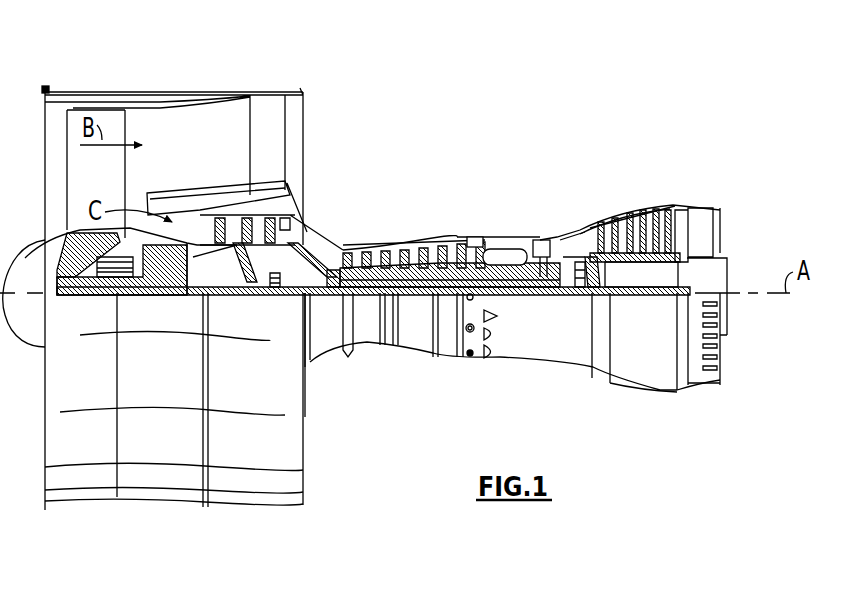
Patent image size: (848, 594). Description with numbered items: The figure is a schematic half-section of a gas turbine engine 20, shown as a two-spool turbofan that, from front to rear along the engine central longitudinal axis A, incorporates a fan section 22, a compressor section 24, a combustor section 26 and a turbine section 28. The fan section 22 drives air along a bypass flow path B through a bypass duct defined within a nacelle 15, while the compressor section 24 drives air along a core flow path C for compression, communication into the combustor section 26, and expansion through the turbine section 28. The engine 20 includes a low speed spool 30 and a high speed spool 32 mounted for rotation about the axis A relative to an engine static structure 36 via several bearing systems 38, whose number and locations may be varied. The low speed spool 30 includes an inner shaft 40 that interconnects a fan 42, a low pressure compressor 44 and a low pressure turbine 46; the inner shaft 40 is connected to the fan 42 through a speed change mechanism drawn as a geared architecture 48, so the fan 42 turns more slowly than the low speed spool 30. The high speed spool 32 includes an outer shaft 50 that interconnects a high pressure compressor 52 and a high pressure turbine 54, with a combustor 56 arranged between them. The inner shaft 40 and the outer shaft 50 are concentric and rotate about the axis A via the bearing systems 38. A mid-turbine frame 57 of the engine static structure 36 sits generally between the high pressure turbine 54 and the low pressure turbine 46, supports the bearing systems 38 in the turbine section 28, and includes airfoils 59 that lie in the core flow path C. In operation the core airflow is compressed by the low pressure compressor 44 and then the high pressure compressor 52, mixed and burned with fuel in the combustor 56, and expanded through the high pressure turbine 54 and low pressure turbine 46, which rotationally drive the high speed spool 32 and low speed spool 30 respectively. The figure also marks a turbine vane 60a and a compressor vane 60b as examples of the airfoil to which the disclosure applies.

The nacelle 15 is at (170, 92).
The gas turbine engine 20 is at (508, 122).
The fan section 22 is at (124, 86).
The compressor section 24 is at (342, 218).
The combustor section 26 is at (502, 212).
The turbine section 28 is at (608, 190).
The low speed spool 30 is at (417, 300).
The high speed spool 32 is at (455, 237).
The engine static structure 36 is at (448, 360).
The bearing systems 38 is at (277, 290).
The inner shaft 40 is at (313, 360).
The fan 42 is at (110, 186).
The low pressure compressor 44 is at (280, 197).
The low pressure turbine 46 is at (638, 203).
The geared architecture 48 is at (178, 290).
The outer shaft 50 is at (503, 297).
The high pressure compressor 52 is at (403, 268).
The high pressure turbine 54 is at (547, 240).
The combustor 56 is at (502, 252).
The mid-turbine frame 57 is at (580, 226).
The airfoils 59 is at (604, 275).
The turbine vane 60a is at (600, 228).
The compressor vane 60b is at (438, 245).